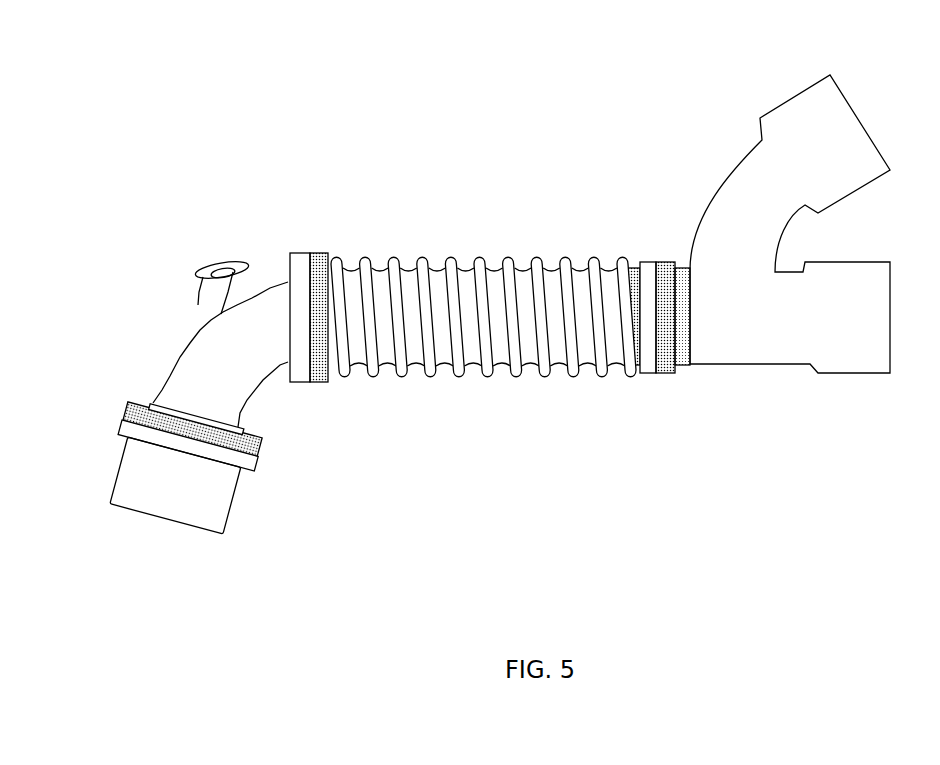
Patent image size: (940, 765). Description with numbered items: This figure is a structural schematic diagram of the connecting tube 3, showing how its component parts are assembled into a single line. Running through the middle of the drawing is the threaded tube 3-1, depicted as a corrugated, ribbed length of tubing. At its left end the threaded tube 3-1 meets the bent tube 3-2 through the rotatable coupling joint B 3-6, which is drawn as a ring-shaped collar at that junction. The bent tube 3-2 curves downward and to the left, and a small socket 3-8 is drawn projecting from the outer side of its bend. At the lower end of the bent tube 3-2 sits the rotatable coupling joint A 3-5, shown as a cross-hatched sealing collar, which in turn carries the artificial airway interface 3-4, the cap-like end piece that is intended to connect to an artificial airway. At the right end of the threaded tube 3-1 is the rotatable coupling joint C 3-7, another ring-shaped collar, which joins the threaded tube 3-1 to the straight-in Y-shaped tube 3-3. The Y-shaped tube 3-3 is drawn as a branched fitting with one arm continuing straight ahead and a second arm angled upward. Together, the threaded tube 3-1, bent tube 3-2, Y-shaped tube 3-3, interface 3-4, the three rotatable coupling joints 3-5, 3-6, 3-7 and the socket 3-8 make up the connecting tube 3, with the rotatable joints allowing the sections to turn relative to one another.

The connecting tube 3 is at (501, 362).
The threaded tube 3-1 is at (483, 282).
The bent tube 3-2 is at (187, 375).
The straight-in Y-shaped tube 3-3 is at (813, 368).
The artificial airway interface 3-4 is at (188, 517).
The rotatable coupling joint A 3-5 is at (257, 457).
The rotatable coupling joint B 3-6 is at (310, 370).
The rotatable coupling joint C 3-7 is at (660, 372).
The socket 3-8 is at (208, 283).